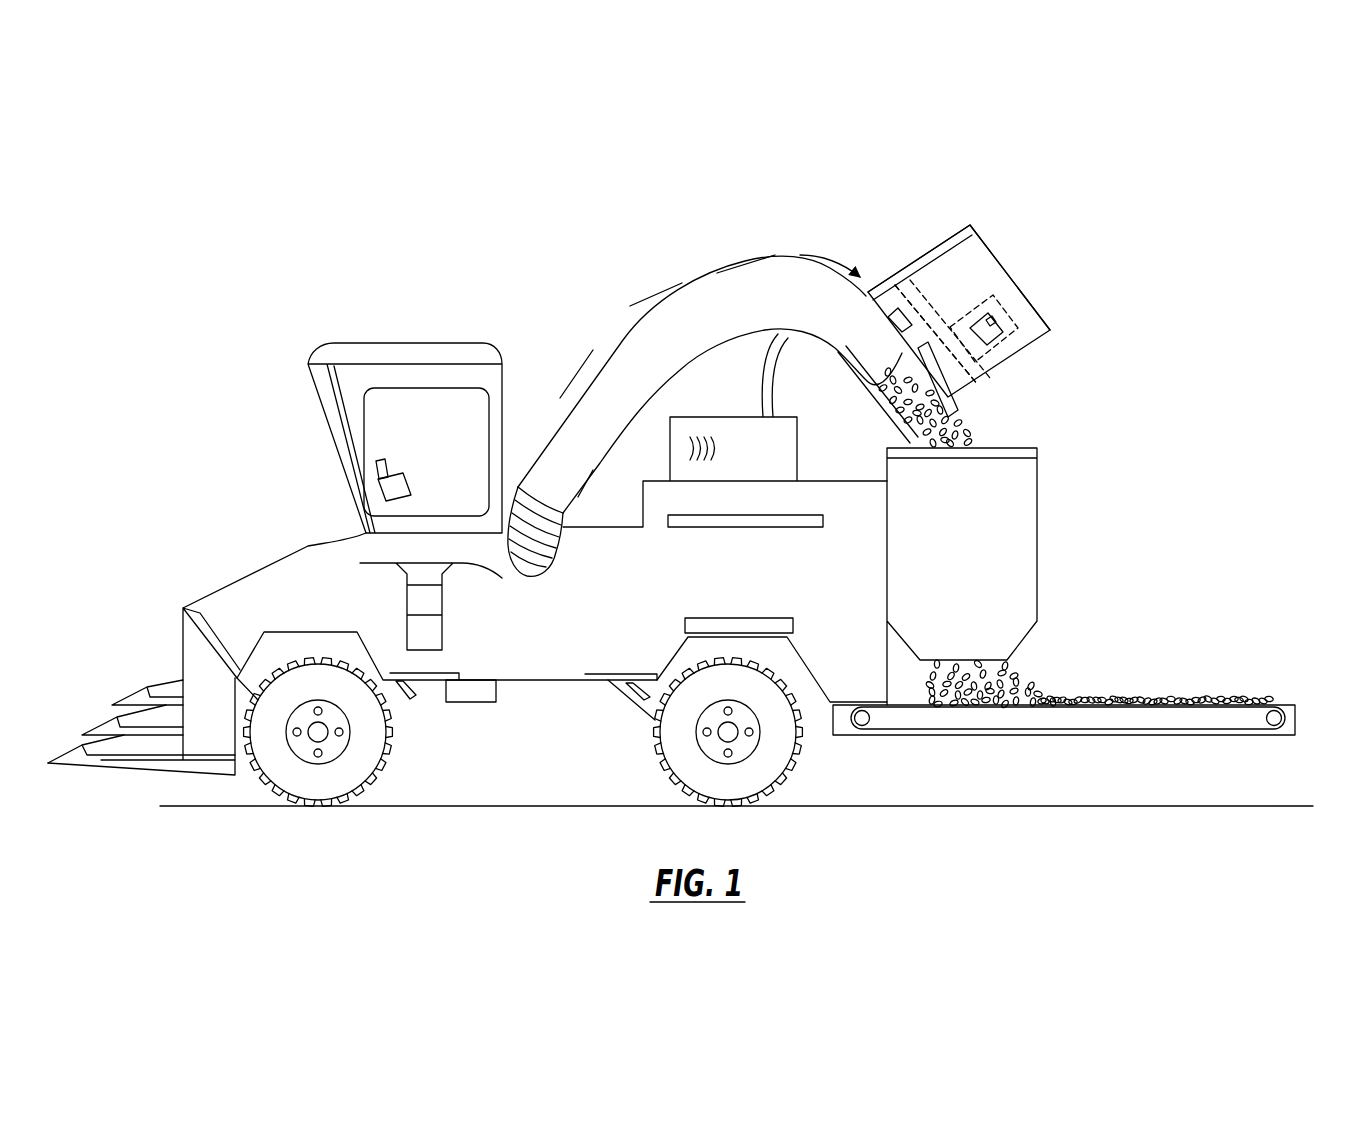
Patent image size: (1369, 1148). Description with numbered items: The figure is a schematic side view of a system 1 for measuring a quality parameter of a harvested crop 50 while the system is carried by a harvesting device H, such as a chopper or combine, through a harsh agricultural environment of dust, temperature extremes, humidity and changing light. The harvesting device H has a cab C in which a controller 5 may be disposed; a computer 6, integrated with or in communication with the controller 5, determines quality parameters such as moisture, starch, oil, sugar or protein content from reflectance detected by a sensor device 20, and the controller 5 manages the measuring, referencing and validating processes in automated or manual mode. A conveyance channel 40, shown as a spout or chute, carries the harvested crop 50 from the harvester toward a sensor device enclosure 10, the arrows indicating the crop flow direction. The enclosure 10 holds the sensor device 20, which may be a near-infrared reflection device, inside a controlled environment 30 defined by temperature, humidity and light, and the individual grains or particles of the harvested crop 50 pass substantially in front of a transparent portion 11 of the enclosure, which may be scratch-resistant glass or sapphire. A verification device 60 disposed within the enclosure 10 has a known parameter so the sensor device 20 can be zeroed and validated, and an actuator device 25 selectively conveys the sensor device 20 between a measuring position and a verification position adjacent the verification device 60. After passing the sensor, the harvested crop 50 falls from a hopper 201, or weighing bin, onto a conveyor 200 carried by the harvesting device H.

The system 1 is at (700, 445).
The harvesting device H is at (467, 517).
The cab C is at (379, 439).
The controller 5 is at (388, 494).
The computer 6 is at (377, 468).
The conveyance channel 40 is at (687, 340).
The sensor device enclosure 10 is at (974, 275).
The actuator device 25 is at (923, 306).
The controlled environment 30 is at (960, 270).
The verification device 60 is at (922, 300).
The sensor device 20 is at (990, 320).
The transparent portion 11 is at (977, 383).
The harvested crop 50 is at (968, 428).
The hopper 201 is at (1003, 535).
The conveyor 200 is at (1298, 717).